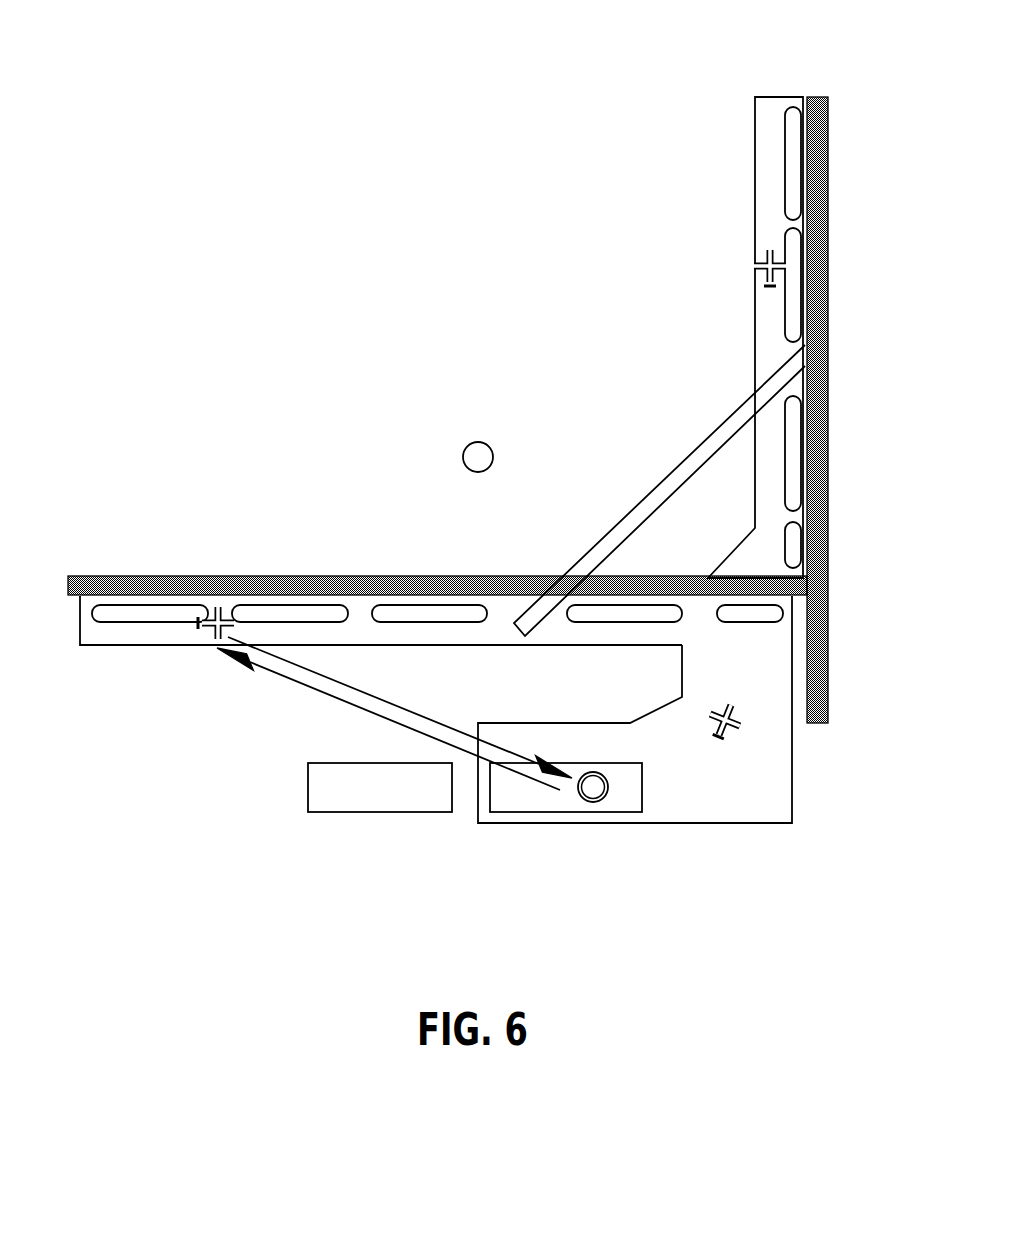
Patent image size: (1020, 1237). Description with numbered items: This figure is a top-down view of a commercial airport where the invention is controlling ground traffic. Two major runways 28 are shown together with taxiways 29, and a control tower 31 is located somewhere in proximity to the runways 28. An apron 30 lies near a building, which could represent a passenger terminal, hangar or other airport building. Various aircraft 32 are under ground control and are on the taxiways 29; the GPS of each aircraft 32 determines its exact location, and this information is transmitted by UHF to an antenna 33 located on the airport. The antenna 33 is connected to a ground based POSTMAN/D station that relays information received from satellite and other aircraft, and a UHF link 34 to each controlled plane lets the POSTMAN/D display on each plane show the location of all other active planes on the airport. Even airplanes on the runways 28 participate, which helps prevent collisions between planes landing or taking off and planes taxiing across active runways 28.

The runway 28 is at (819, 95).
The taxiway 29 is at (765, 182).
The apron 30 is at (655, 787).
The control tower 31 is at (475, 437).
The aircraft 32 is at (748, 273).
The antenna 33 is at (588, 807).
The UHF link 34 is at (353, 711).